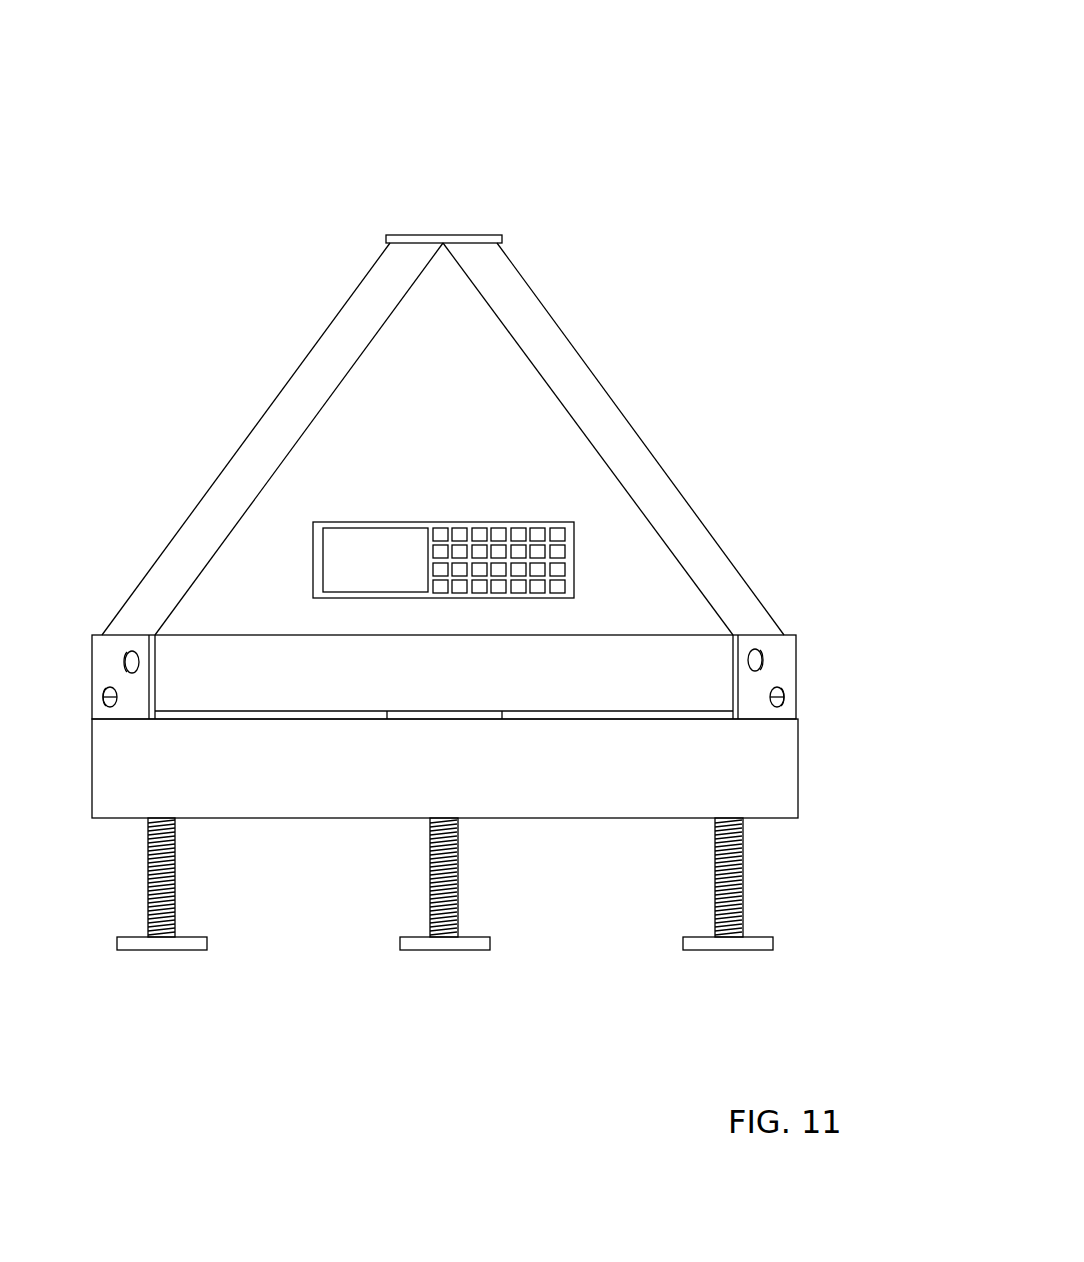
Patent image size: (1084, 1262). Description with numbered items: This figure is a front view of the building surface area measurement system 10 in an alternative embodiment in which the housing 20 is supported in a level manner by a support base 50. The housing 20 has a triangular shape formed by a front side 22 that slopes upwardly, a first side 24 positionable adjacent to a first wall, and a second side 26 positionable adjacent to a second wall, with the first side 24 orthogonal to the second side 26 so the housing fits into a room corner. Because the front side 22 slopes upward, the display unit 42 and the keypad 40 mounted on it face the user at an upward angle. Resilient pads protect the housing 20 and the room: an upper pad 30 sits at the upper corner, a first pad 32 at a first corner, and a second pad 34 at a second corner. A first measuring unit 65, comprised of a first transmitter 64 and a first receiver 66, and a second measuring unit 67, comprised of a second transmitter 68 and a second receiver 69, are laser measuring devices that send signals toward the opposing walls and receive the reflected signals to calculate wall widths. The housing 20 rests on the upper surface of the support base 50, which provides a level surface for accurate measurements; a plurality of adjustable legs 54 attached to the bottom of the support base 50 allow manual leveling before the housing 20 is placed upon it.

The building surface area measurement system 10 is at (656, 112).
The housing 20 is at (604, 382).
The front side 22 is at (390, 450).
The first side 24 is at (667, 471).
The second side 26 is at (263, 411).
The upper pad 30 is at (483, 234).
The first pad 32 is at (783, 673).
The second pad 34 is at (108, 677).
The keypad 40 is at (560, 552).
The display unit 42 is at (328, 551).
The support base 50 is at (357, 782).
The adjustable legs 54 is at (178, 905).
The first transmitter 64 is at (763, 655).
The first measuring unit 65 is at (775, 728).
The first receiver 66 is at (783, 694).
The second measuring unit 67 is at (110, 728).
The second transmitter 68 is at (125, 658).
The second receiver 69 is at (102, 697).